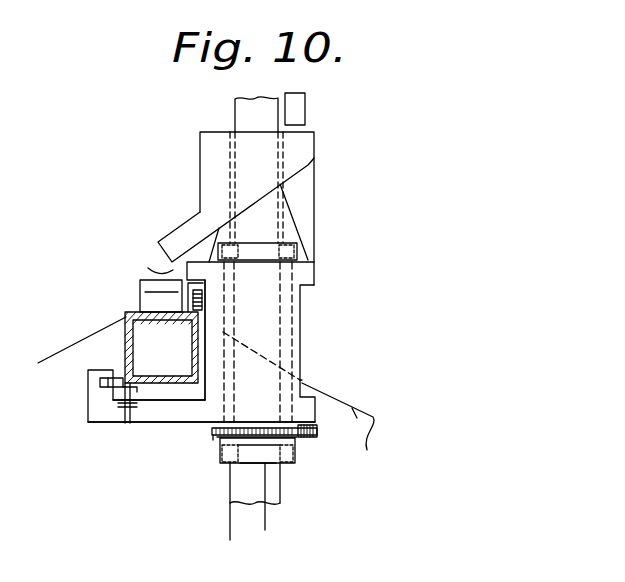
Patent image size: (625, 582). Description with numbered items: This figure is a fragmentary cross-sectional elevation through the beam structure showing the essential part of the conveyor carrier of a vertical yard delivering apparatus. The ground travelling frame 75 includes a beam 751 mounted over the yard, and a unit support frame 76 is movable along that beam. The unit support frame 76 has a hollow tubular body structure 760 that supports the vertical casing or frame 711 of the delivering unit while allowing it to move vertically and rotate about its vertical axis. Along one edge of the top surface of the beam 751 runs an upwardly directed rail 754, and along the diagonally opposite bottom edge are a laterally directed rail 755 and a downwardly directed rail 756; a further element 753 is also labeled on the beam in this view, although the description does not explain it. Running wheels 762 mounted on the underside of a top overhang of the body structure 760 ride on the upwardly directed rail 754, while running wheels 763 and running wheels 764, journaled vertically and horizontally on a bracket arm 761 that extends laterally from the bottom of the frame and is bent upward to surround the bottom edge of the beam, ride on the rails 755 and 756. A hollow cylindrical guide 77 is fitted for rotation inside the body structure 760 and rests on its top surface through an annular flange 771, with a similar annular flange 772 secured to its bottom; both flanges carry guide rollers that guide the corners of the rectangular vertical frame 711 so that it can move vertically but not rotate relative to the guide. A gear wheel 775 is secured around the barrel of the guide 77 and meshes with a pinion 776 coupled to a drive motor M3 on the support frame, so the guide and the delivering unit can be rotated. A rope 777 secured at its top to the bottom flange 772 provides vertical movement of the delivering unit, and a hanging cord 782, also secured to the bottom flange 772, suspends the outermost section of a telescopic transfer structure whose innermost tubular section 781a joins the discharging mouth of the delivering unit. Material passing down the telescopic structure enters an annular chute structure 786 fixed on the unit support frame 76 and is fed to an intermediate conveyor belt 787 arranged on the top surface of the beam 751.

The ground travelling frame 75 is at (70, 335).
The beam 751 is at (120, 330).
The cable 753 is at (346, 410).
The upwardly directed rail 754 is at (193, 310).
The laterally directed rail 755 is at (122, 382).
The downwardly directed rail 756 is at (135, 392).
The unit support frame 76 is at (328, 273).
The hollow tubular body structure 760 is at (300, 332).
The bracket arm 761 is at (175, 412).
The running wheels 762 is at (205, 287).
The running wheels 763 is at (108, 387).
The running wheels 764 is at (127, 423).
The hollow cylindrical guide 77 is at (300, 300).
The annular flange 771 is at (258, 243).
The annular flange 772 is at (247, 465).
The gear wheel 775 is at (213, 463).
The pinion 776 is at (317, 432).
The rope 777 is at (230, 530).
The innermost tubular section 781a is at (305, 110).
The hanging cord 782 is at (265, 515).
The annular chute structure 786 is at (200, 170).
The intermediate conveyor belt 787 is at (147, 261).
The vertical casing or frame 711 is at (280, 490).
The drive motor M3 is at (302, 383).